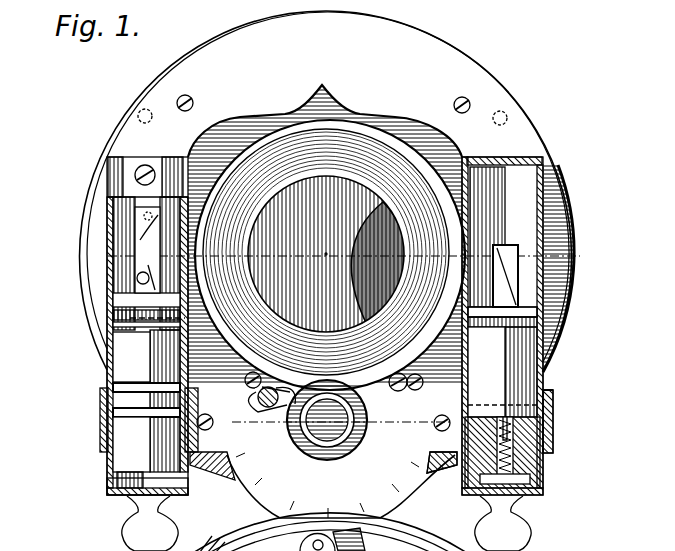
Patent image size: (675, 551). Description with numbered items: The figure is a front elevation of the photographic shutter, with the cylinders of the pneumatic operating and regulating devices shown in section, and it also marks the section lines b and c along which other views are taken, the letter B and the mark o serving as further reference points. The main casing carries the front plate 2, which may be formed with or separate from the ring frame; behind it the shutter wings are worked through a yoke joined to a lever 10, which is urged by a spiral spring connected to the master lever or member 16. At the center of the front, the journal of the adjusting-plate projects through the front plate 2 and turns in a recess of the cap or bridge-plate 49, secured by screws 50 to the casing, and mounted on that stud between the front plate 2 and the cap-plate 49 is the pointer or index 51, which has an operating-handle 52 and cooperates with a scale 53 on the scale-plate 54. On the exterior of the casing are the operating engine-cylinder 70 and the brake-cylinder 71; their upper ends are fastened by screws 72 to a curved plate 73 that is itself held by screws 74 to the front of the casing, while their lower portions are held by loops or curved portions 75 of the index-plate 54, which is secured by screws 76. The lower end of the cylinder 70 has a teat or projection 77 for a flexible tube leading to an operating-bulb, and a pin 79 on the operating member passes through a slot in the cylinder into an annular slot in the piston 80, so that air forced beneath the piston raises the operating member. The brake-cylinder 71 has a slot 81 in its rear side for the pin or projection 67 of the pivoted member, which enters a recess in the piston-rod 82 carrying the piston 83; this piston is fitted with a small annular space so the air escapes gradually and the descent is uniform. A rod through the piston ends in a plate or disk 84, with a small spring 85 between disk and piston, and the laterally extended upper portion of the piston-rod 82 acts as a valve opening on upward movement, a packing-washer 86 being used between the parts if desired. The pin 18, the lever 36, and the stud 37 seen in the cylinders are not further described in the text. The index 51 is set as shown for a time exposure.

The front plate 2 is at (330, 255).
The lever 10 is at (330, 532).
The master lever or member 16 is at (155, 236).
The lever chamber 18 is at (156, 250).
The lever 36 is at (504, 276).
The pivot stud 37 is at (148, 272).
The cap or bridge-plate 49 is at (327, 420).
The screws 50 is at (247, 377).
The pointer or index 51 is at (266, 408).
The operating-handle 52 is at (275, 392).
The scale 53 is at (397, 488).
The scale-plate 54 is at (323, 485).
The pin or projection 67 is at (509, 332).
The operating engine-cylinder 70 is at (101, 259).
The brake-cylinder 71 is at (550, 183).
The screws 72 is at (150, 168).
The curved plate 73 is at (326, 228).
The screws 74 is at (193, 101).
The loops or curved portions 75 is at (554, 433).
The screws 76 is at (208, 418).
The teat or projection 77 is at (135, 505).
The pin 79 is at (183, 318).
The piston 80 is at (131, 357).
The slot 81 is at (508, 245).
The piston-rod 82 is at (502, 326).
The piston 83 is at (553, 450).
The plate or disk 84 is at (540, 493).
The spring 85 is at (530, 470).
The packing-washer 86 is at (553, 392).
The section line b b is at (107, 420).
The section line c c is at (60, 255).
The optical center o is at (329, 261).
The section line B is at (339, 415).